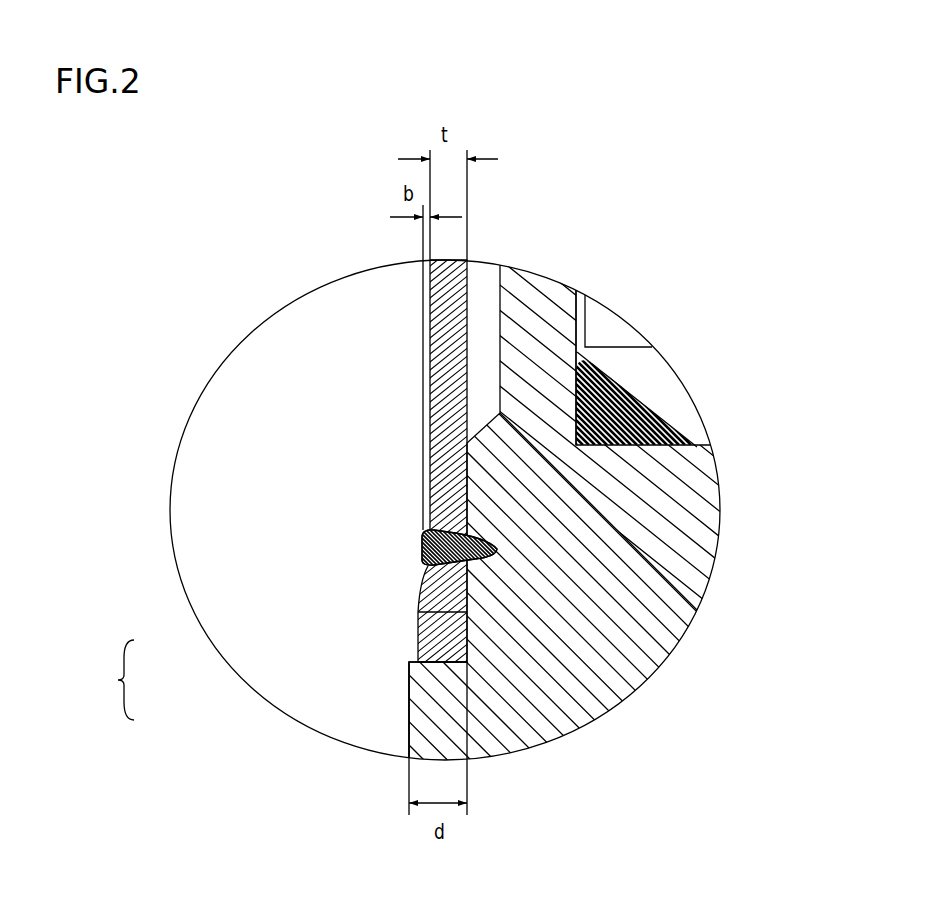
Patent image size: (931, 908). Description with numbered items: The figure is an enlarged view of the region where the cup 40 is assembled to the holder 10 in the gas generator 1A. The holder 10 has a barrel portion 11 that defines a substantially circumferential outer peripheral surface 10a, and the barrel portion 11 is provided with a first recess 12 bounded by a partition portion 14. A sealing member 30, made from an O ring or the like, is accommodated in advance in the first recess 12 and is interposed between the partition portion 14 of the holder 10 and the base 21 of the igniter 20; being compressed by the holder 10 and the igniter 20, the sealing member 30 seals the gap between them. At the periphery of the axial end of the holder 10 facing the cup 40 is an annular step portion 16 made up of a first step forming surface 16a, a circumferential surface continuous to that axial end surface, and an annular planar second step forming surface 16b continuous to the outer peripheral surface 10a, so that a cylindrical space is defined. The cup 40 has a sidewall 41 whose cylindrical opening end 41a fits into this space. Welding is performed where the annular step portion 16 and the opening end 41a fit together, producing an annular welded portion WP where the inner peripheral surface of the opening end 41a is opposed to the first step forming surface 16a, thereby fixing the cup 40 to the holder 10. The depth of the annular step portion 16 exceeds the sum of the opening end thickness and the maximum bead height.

The gas generator 1A is at (812, 117).
The cup 40 is at (465, 461).
The sidewall 41 is at (445, 393).
The opening end 41a is at (447, 587).
The annular welded portion WP is at (438, 548).
The annular step portion 16 is at (278, 666).
The first step forming surface 16a is at (420, 613).
The second step forming surface 16b is at (420, 662).
The partition portion 14 is at (625, 548).
The holder 10 is at (492, 751).
The barrel portion 11 is at (542, 695).
The outer peripheral surface 10a is at (410, 708).
The first recess 12 is at (578, 316).
The igniter 20 is at (657, 309).
The base 21 is at (615, 332).
The sealing member 30 is at (618, 410).